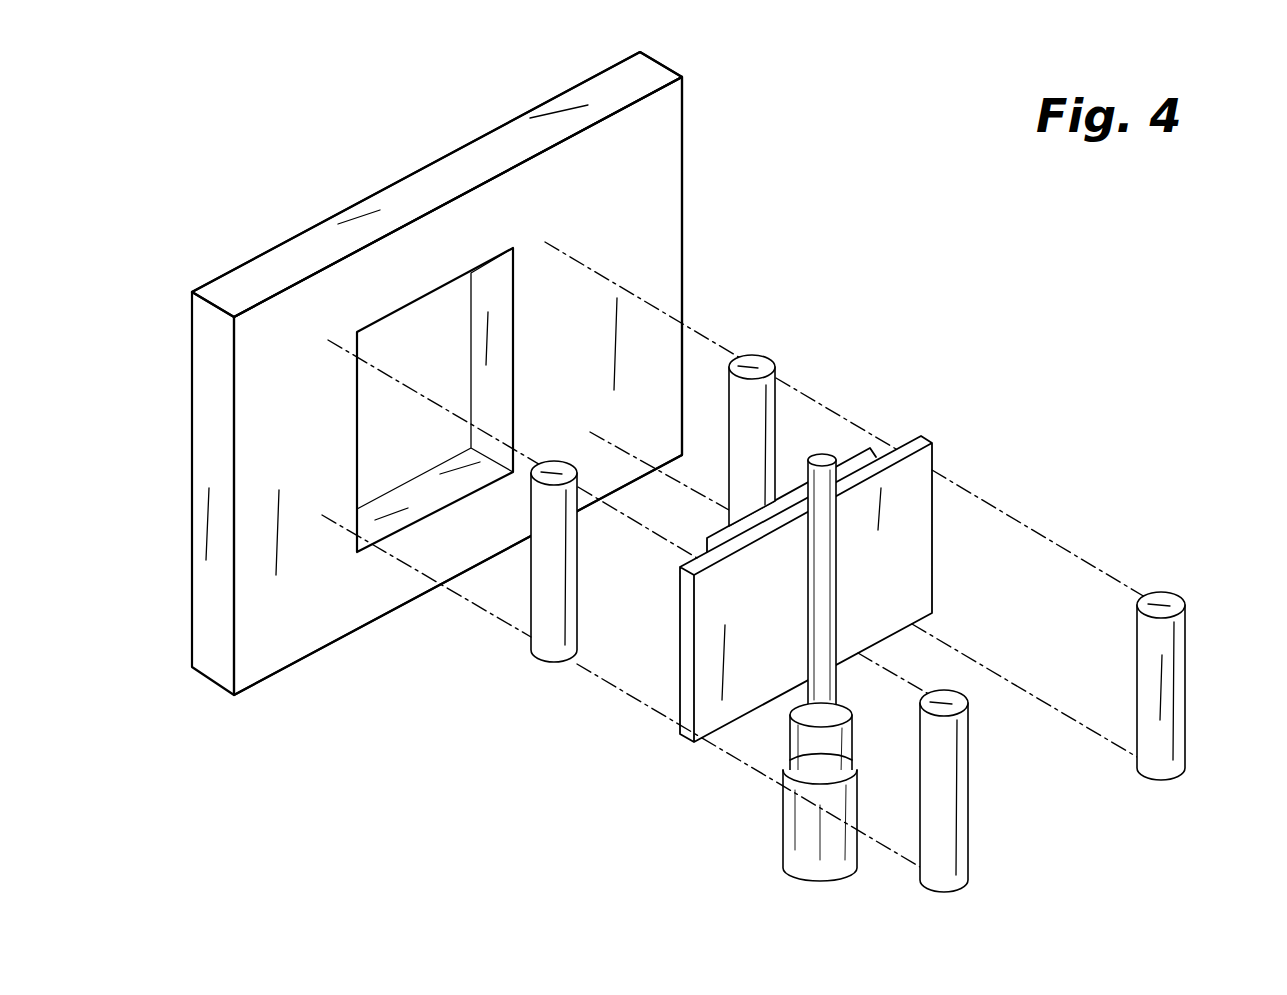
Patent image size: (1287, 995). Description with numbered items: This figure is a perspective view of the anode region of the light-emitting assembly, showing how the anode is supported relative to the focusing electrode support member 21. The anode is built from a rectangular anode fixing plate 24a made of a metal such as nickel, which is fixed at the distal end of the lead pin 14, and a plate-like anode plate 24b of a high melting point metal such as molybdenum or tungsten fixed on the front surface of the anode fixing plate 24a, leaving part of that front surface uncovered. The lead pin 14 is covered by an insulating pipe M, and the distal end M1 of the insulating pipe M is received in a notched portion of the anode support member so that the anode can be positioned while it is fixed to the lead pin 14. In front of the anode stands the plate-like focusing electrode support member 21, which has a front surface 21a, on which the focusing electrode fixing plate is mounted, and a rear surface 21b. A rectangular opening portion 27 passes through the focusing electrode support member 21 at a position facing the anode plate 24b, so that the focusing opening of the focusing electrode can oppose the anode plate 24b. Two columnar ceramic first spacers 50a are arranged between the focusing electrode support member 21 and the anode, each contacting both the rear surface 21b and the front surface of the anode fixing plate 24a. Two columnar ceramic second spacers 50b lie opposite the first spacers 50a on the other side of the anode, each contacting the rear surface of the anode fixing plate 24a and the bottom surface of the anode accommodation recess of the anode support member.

The focusing electrode support member 21 is at (682, 120).
The front surface of focusing electrode support member 21a is at (462, 148).
The rear surface of focusing electrode support member 21b is at (655, 232).
The opening portion 27 is at (435, 378).
The anode fixing plate 24a is at (910, 518).
The anode plate 24b is at (870, 452).
The first spacers 50a is at (757, 364).
The second spacers 50b is at (943, 847).
The lead pin 14 is at (826, 572).
The insulating pipe M is at (803, 843).
The distal end of insulating pipe M1 is at (832, 744).